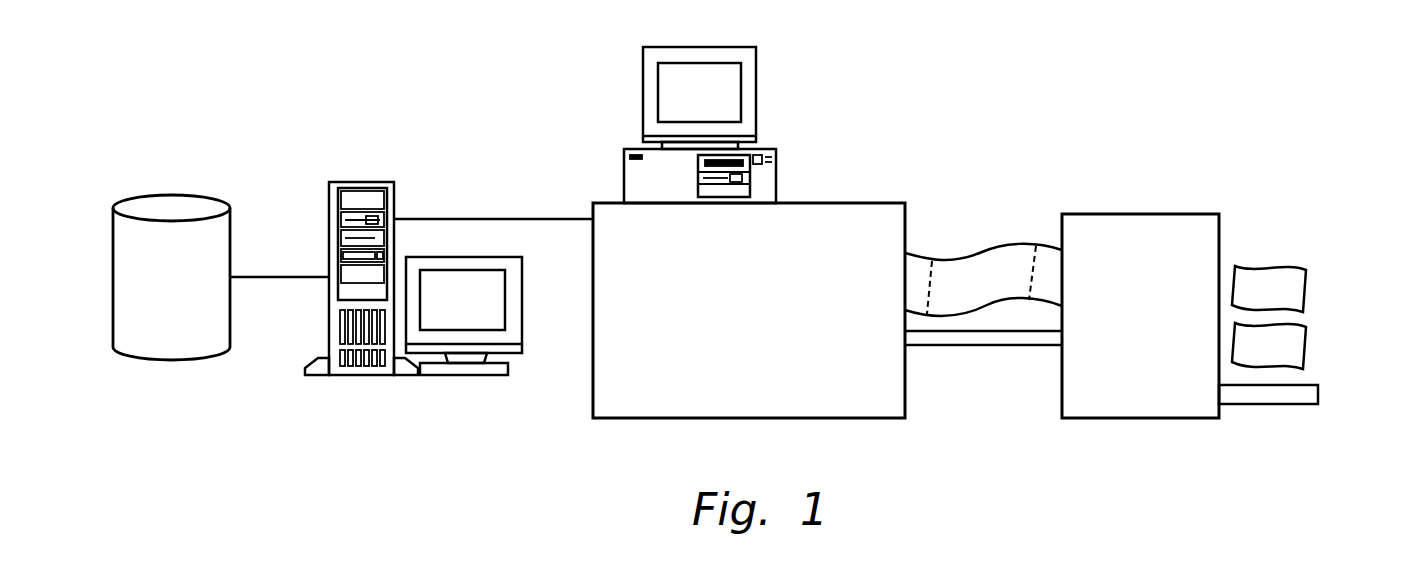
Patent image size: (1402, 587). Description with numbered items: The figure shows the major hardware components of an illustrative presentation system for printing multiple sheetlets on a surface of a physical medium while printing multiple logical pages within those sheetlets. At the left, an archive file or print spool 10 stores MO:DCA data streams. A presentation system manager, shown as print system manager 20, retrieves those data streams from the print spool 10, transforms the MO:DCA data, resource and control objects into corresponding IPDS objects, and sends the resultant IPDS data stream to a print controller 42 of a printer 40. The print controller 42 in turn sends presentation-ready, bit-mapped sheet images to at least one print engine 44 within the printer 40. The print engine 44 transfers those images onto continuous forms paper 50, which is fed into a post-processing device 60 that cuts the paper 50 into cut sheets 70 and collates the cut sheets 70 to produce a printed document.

The print spool 10 is at (138, 204).
The print system manager 20 is at (329, 207).
The printer 40 is at (859, 136).
The print controller 42 is at (643, 97).
The print engine 44 is at (882, 203).
The continuous forms paper 50 is at (1005, 213).
The post-processing device 60 is at (1196, 214).
The cut sheets 70 is at (1314, 263).